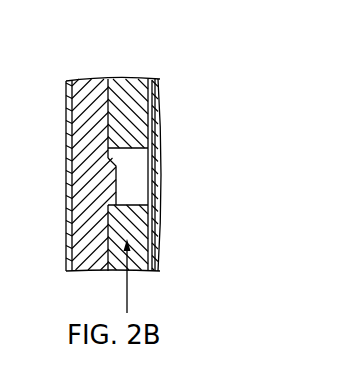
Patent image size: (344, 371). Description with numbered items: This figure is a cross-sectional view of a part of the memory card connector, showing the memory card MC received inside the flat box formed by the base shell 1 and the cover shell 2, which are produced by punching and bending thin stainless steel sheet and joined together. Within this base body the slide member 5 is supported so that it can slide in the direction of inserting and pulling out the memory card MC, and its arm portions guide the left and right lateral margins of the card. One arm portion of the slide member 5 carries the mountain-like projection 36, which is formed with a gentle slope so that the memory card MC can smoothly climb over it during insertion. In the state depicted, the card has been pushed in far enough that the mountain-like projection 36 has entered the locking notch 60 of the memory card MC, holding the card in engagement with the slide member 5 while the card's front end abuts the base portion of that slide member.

The base shell 1 is at (70, 104).
The cover shell 2 is at (158, 98).
The slide member 5 is at (98, 203).
The mountain-like projection 36 is at (110, 179).
The locking notch 60 is at (136, 166).
The memory card MC is at (125, 102).